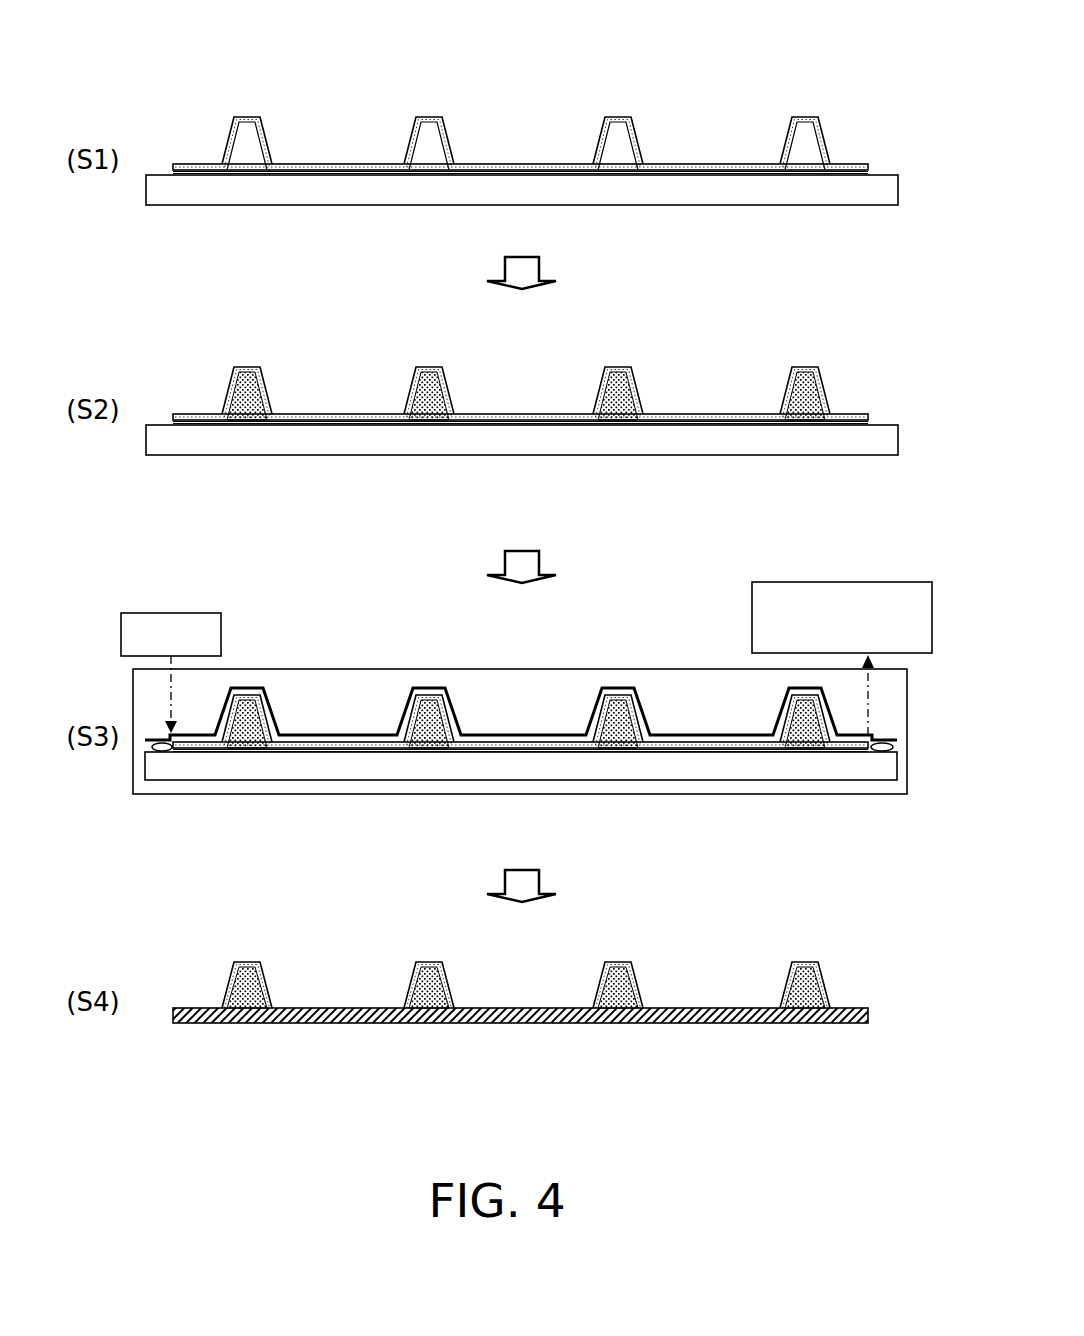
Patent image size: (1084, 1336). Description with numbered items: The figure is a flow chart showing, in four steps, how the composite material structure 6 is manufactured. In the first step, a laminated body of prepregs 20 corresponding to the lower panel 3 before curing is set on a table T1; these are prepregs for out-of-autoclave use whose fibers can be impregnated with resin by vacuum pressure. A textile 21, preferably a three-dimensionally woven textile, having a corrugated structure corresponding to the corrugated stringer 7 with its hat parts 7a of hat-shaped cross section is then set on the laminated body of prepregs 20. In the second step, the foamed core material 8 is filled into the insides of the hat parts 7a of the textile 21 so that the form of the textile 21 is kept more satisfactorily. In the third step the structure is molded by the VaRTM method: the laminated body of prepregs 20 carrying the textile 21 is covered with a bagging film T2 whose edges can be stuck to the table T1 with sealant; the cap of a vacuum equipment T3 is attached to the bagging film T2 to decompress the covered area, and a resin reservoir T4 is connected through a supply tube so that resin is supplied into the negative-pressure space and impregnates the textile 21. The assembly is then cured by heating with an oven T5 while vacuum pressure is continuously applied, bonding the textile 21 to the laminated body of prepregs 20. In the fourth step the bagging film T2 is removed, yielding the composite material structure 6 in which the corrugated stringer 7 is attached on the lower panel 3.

The lower panel 3 is at (685, 1023).
The composite material structure 6 is at (314, 947).
The corrugated stringer 7 is at (618, 962).
The hat part 7a is at (637, 138).
The foamed core material 8 is at (597, 381).
The laminated body of prepregs 20 is at (670, 174).
The textile 21 is at (613, 117).
The table T1 is at (247, 205).
The bagging film T2 is at (443, 692).
The vacuum equipment T3 is at (752, 632).
The resin reservoir T4 is at (221, 628).
The oven T5 is at (337, 669).